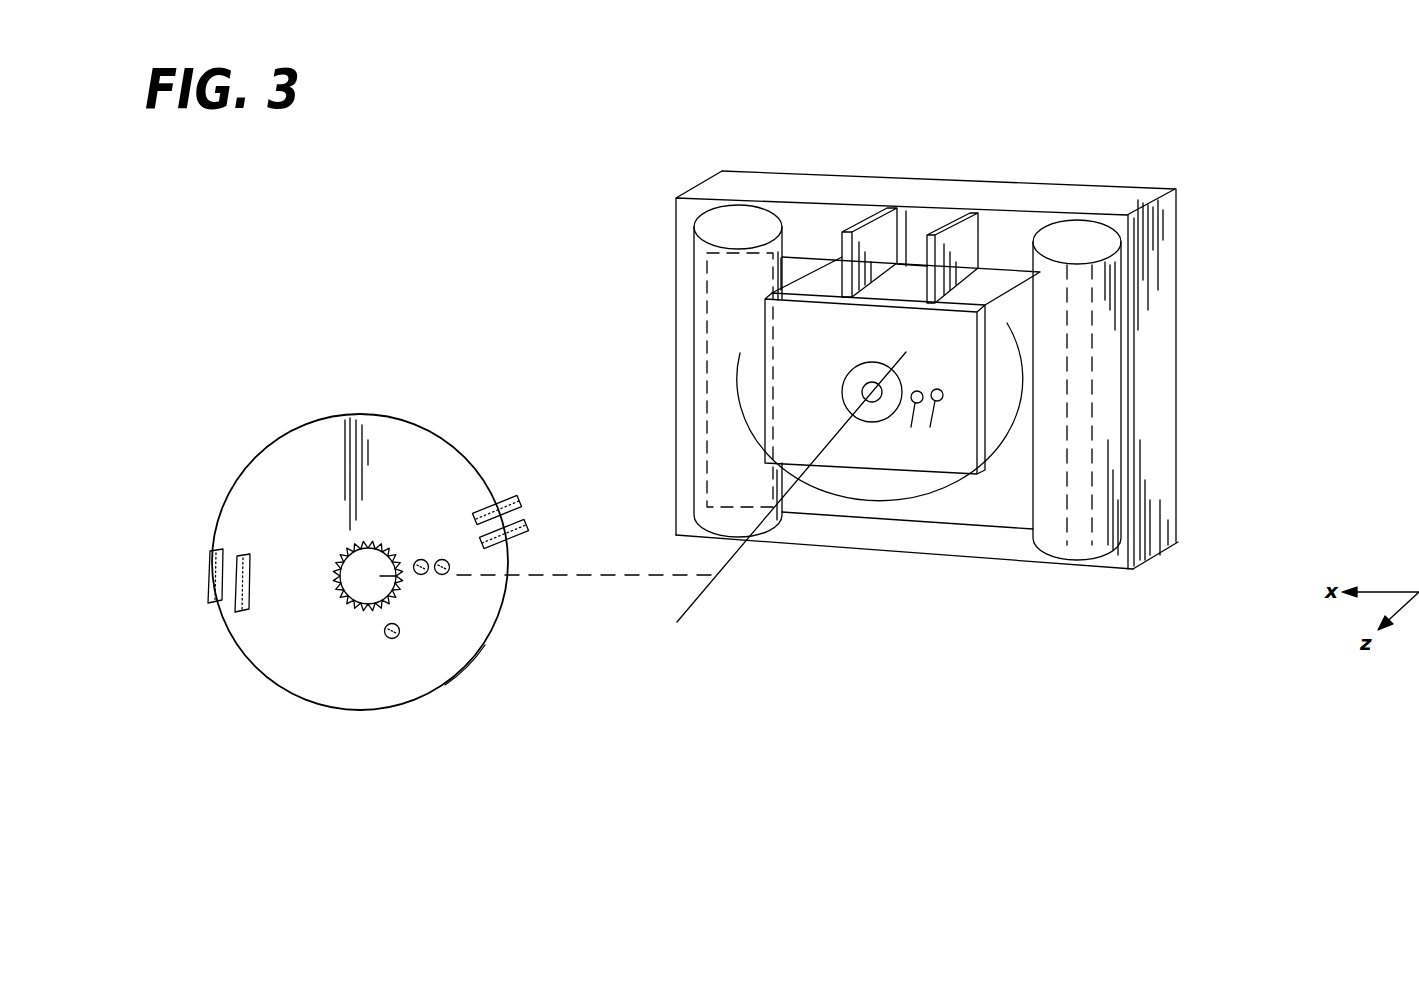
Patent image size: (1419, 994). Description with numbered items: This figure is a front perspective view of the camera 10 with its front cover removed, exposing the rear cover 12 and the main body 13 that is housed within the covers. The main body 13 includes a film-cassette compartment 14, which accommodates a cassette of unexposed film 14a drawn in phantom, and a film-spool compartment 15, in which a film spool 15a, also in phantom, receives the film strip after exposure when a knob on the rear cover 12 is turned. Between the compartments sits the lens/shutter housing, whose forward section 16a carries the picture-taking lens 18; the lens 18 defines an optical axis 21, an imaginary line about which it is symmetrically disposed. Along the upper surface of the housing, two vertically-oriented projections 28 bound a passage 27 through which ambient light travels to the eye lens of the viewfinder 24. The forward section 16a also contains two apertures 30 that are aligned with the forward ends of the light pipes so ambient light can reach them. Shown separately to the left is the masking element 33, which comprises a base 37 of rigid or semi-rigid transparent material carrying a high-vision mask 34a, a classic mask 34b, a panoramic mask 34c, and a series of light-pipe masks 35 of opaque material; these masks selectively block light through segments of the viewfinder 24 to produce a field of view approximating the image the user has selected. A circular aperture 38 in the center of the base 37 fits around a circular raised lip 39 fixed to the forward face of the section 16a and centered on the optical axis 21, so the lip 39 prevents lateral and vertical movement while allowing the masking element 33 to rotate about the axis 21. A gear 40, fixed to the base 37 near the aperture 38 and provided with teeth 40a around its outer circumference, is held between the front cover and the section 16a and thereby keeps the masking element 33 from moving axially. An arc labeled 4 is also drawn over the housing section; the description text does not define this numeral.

The disk receiving position 4 is at (1023, 372).
The camera 10 is at (1190, 182).
The rear cover 12 is at (1168, 292).
The main body 13 is at (933, 520).
The film-cassette compartment 14 is at (701, 403).
The cassette of unexposed film 14a is at (718, 290).
The film-spool compartment 15 is at (1157, 435).
The film spool 15a is at (1085, 487).
The forward section of lens/shutter housing 16a is at (832, 428).
The picture-taking lens 18 is at (890, 362).
The optical axis 21 is at (703, 593).
The viewfinder 24 is at (882, 183).
The passage 27 is at (918, 217).
The vertically-oriented projections 28 is at (860, 235).
The apertures 30 is at (916, 426).
The masking element 33 is at (275, 680).
The high-vision mask 34a is at (370, 416).
The classic mask 34b is at (520, 495).
The panoramic mask 34c is at (206, 578).
The light-pipe masks 35 is at (442, 559).
The base 37 is at (460, 668).
The circular aperture 38 is at (345, 557).
The circular raised lip 39 is at (852, 368).
The gear 40 is at (338, 573).
The teeth 40a is at (400, 592).